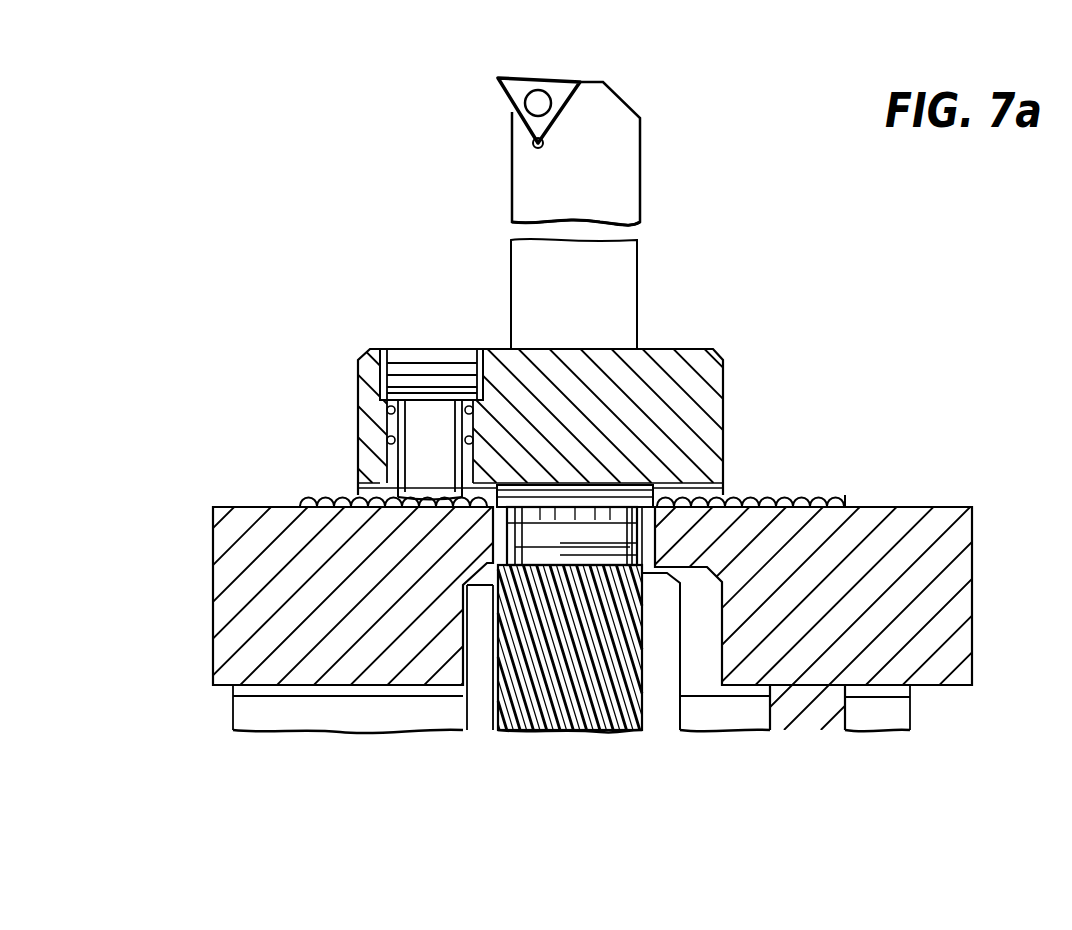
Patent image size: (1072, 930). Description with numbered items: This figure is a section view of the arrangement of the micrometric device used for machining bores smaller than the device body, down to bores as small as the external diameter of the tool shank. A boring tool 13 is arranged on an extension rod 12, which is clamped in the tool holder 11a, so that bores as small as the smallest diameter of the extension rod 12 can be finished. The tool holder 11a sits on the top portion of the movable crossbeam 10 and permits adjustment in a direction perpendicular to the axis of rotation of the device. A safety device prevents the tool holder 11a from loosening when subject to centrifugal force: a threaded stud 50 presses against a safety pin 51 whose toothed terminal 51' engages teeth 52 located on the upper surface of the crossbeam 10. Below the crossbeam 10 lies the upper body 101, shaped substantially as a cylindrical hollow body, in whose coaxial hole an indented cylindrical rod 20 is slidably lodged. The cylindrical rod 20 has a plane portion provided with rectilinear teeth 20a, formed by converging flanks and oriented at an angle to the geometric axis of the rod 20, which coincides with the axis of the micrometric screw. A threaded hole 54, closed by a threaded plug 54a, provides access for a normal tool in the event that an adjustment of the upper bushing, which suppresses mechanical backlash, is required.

The boring tool 13 is at (517, 70).
The extension rod 12 is at (513, 268).
The tool holder 11a is at (726, 348).
The threaded stud 50 is at (417, 348).
The safety pin 51 is at (436, 403).
The toothed terminal 51' is at (380, 448).
The teeth 52 is at (333, 495).
The movable crossbeam 10 is at (235, 532).
The threaded plug 54a is at (667, 487).
The threaded hole 54 is at (650, 563).
The rectilinear teeth 20a is at (518, 732).
The indented cylindrical rod 20 is at (657, 710).
The upper body 101 is at (308, 713).